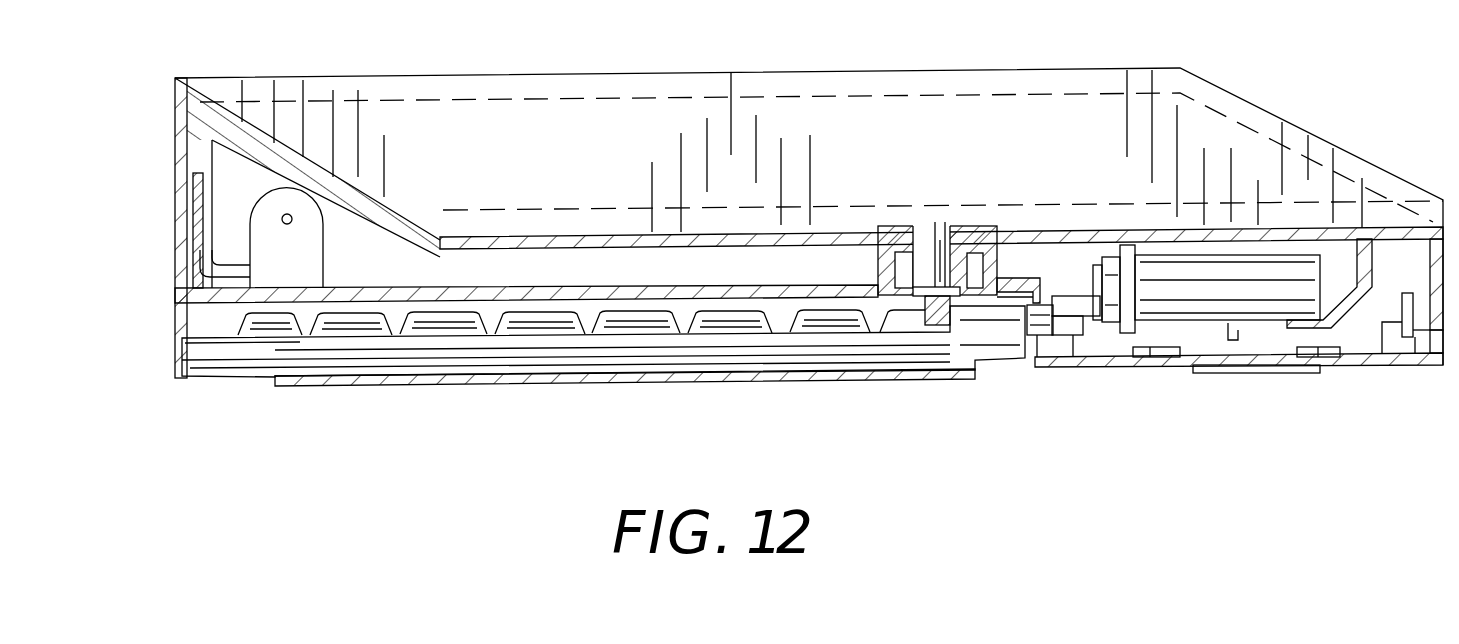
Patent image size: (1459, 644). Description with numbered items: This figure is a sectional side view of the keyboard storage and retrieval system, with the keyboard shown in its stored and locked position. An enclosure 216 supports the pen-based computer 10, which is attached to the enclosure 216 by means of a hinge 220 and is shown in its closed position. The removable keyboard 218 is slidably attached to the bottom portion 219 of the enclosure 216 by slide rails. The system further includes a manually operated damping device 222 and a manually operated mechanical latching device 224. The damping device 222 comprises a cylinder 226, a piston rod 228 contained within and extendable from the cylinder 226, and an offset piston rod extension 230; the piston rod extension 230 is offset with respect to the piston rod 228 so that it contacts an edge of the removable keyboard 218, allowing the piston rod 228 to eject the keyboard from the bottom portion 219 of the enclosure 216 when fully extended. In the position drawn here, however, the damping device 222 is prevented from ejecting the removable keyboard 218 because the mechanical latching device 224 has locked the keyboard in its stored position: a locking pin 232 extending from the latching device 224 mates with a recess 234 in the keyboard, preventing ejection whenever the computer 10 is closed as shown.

The pen-based computer 10 is at (858, 58).
The enclosure 216 is at (185, 138).
The hinge 220 is at (282, 219).
The removable keyboard 218 is at (397, 353).
The bottom portion 219 is at (568, 300).
The mechanical latching device 224 is at (936, 222).
The locking pin 232 is at (925, 322).
The recess 234 is at (952, 322).
The offset piston rod extension 230 is at (1055, 335).
The piston rod 228 is at (1073, 322).
The cylinder 226 is at (1183, 297).
The damping device 222 is at (1247, 296).